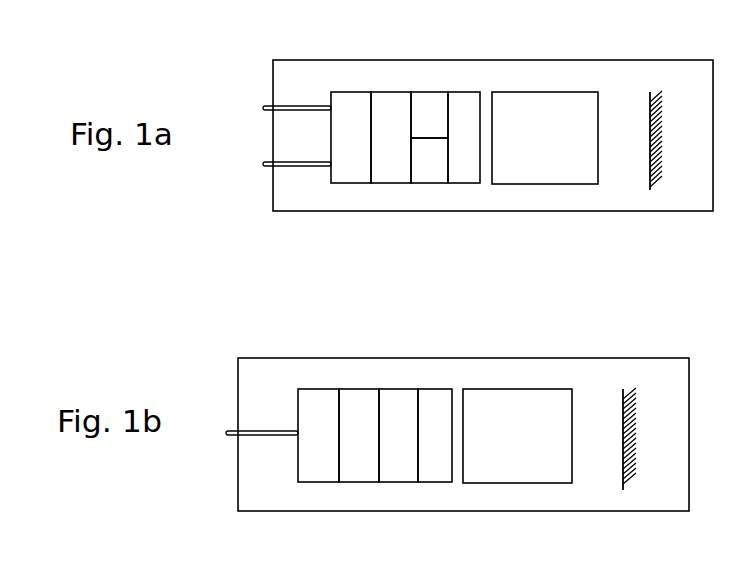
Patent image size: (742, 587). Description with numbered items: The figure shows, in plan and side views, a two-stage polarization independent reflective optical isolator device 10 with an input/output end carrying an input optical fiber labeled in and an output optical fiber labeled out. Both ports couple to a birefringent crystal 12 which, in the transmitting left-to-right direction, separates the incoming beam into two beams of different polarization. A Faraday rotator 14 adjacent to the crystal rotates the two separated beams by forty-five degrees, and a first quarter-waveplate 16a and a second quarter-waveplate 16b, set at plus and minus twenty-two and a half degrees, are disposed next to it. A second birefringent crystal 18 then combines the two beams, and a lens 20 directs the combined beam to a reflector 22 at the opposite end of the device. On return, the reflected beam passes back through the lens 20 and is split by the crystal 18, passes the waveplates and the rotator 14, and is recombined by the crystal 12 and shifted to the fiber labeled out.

In FIG. 1A, the device 10 is at (468, 60).
In FIG. 1B, the device 10 is at (436, 358).
In FIG. 1A, the birefringent crystal 12 is at (337, 92).
In FIG. 1B, the birefringent crystal 12 is at (307, 389).
In FIG. 1A, the Faraday rotator 14 is at (387, 92).
In FIG. 1B, the Faraday rotator 14 is at (352, 389).
In FIG. 1A, the first quarter-waveplate 16a is at (437, 183).
In FIG. 1B, the first quarter-waveplate 16a is at (407, 482).
In FIG. 1A, the second quarter-waveplate 16b is at (427, 92).
In FIG. 1A, the second birefringent crystal 18 is at (465, 183).
In FIG. 1B, the second birefringent crystal 18 is at (437, 482).
In FIG. 1A, the lens 20 is at (532, 184).
In FIG. 1B, the lens 20 is at (507, 483).
In FIG. 1A, the reflector 22 is at (650, 190).
In FIG. 1B, the reflector 22 is at (623, 490).